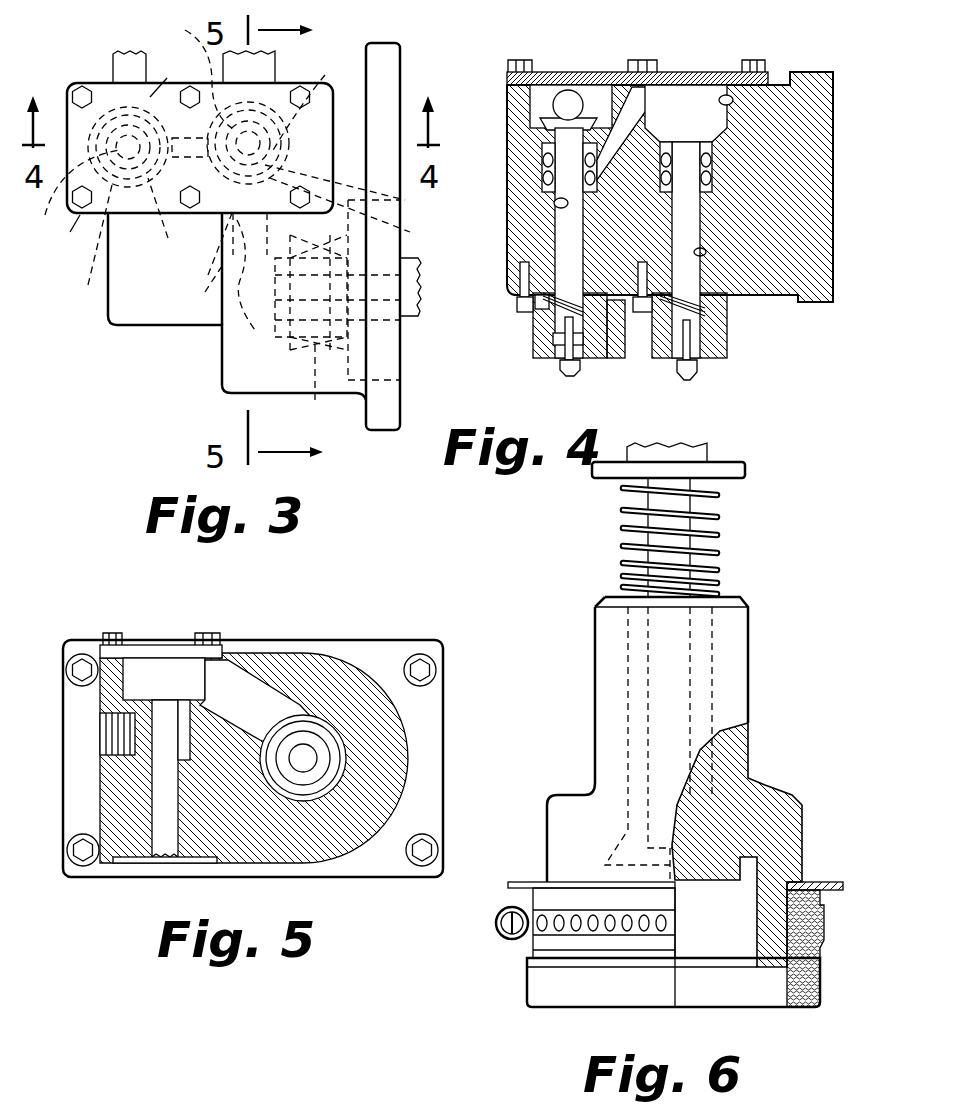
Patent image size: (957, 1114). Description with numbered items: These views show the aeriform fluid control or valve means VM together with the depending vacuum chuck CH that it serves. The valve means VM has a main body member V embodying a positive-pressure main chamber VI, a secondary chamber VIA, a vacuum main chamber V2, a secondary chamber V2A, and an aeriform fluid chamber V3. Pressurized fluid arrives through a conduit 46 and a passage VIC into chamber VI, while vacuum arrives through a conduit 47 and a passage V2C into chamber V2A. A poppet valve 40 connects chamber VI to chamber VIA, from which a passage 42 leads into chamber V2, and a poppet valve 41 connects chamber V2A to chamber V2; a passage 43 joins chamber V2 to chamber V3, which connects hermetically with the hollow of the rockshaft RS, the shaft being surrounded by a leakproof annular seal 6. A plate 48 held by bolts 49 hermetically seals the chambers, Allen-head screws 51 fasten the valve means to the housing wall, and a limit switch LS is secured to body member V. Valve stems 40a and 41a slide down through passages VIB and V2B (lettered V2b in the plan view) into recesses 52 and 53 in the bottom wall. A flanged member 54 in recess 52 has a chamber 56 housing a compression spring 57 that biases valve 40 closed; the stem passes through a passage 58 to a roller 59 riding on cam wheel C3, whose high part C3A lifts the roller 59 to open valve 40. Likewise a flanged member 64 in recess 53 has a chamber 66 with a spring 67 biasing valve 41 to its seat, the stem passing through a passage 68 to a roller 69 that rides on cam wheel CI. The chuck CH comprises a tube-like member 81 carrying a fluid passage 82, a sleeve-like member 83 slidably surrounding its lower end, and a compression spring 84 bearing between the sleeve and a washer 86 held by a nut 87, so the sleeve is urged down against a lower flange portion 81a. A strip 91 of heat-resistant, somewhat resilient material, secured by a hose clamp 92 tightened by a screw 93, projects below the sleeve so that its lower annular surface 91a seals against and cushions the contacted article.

In FIG. 3, the plate 48 is at (103, 90).
In FIG. 4, the plate 48 is at (577, 78).
In FIG. 5, the plate 48 is at (160, 645).
In FIG. 3, the conduit or pipe 46 is at (104, 86).
In FIG. 3, the conduit or pipe 47 is at (274, 72).
In FIG. 3, the bolts 49 is at (80, 88).
In FIG. 4, the bolts 49 is at (760, 64).
In FIG. 5, the bolts 49 is at (112, 633).
In FIG. 3, the aeriform fluid control or valve means VM is at (223, 380).
In FIG. 4, the aeriform fluid control or valve means VM is at (777, 74).
In FIG. 5, the aeriform fluid control or valve means VM is at (446, 757).
In FIG. 3, the main pressure chamber VI is at (215, 205).
In FIG. 4, the main pressure chamber VI is at (533, 108).
In FIG. 3, the secondary chamber VIA is at (141, 213).
In FIG. 4, the secondary chamber VIA is at (545, 165).
In FIG. 3, the passage VIB is at (52, 232).
In FIG. 4, the passage VIB is at (556, 205).
In FIG. 3, the passage VIC is at (172, 73).
In FIG. 4, the passage VIC is at (566, 97).
In FIG. 3, the vacuum main chamber V2 is at (280, 190).
In FIG. 4, the vacuum main chamber V2 is at (727, 104).
In FIG. 5, the vacuum main chamber V2 is at (122, 688).
In FIG. 3, the secondary chamber V2A is at (315, 101).
In FIG. 4, the secondary chamber V2A is at (712, 155).
In FIG. 5, the secondary chamber V2A is at (192, 742).
In FIG. 4, the passage V2B is at (702, 254).
In FIG. 5, the passage V2B is at (190, 838).
In FIG. 3, the passage V2C is at (182, 72).
In FIG. 4, the passage V2C is at (712, 185).
In FIG. 5, the passage V2C is at (100, 728).
In FIG. 3, the passage V2b is at (365, 214).
In FIG. 3, the aeriform fluid chamber V3 is at (225, 335).
In FIG. 5, the aeriform fluid chamber V3 is at (338, 752).
In FIG. 3, the main body member V is at (275, 383).
In FIG. 4, the main body member V is at (641, 230).
In FIG. 5, the main body member V is at (233, 790).
In FIG. 3, the poppet valve 40 is at (90, 241).
In FIG. 4, the poppet valve 40 is at (585, 117).
In FIG. 3, the valve stem 40a is at (191, 249).
In FIG. 4, the valve stem 40a is at (575, 243).
In FIG. 3, the poppet valve 41 is at (230, 136).
In FIG. 4, the poppet valve 41 is at (683, 133).
In FIG. 5, the poppet valve 41 is at (172, 706).
In FIG. 3, the valve stem 41a is at (360, 195).
In FIG. 4, the valve stem 41a is at (700, 222).
In FIG. 5, the valve stem 41a is at (170, 810).
In FIG. 3, the passage 42 is at (152, 168).
In FIG. 4, the passage 42 is at (624, 139).
In FIG. 3, the passage 43 is at (197, 291).
In FIG. 5, the passage 43 is at (262, 702).
In FIG. 3, the limit switch LS is at (158, 310).
In FIG. 3, the rockshaft RS is at (418, 314).
In FIG. 5, the rockshaft RS is at (305, 780).
In FIG. 3, the leakproof annular seal 6 is at (312, 388).
In FIG. 5, the leakproof annular seal 6 is at (330, 792).
In FIG. 5, the Allen-head screws 51 is at (80, 662).
In FIG. 4, the recess 52 is at (632, 296).
In FIG. 4, the recess 53 is at (720, 292).
In FIG. 5, the recess 53 is at (125, 857).
In FIG. 4, the flanged member 54 is at (543, 356).
In FIG. 4, the chamber 56 is at (530, 312).
In FIG. 4, the compression spring 57 is at (553, 338).
In FIG. 4, the passage 58 is at (626, 329).
In FIG. 4, the roller or wheel 59 is at (587, 360).
In FIG. 4, the flanged member 64 is at (730, 355).
In FIG. 4, the chamber 66 is at (718, 325).
In FIG. 4, the compression spring 67 is at (730, 305).
In FIG. 4, the passage 68 is at (660, 342).
In FIG. 4, the roller or wheel 69 is at (695, 368).
In FIG. 4, the cam wheel C3 is at (568, 376).
In FIG. 4, the high part of cam wheel C3A is at (580, 375).
In FIG. 4, the cam wheel CI is at (686, 386).
In FIG. 6, the tube-like member 81 is at (705, 530).
In FIG. 6, the lower flange portion 81a is at (623, 944).
In FIG. 6, the aeriform fluid passage 82 is at (690, 506).
In FIG. 6, the sleeve-like member 83 is at (740, 662).
In FIG. 6, the compression spring 84 is at (712, 565).
In FIG. 6, the washer 86 is at (744, 471).
In FIG. 6, the nut 87 is at (705, 456).
In FIG. 6, the vacuum chuck CH is at (614, 837).
In FIG. 6, the strip or annular band 91 is at (823, 980).
In FIG. 6, the lower annular surface 91a is at (812, 1008).
In FIG. 6, the hose clamp 92 is at (656, 932).
In FIG. 6, the screw 93 is at (503, 937).